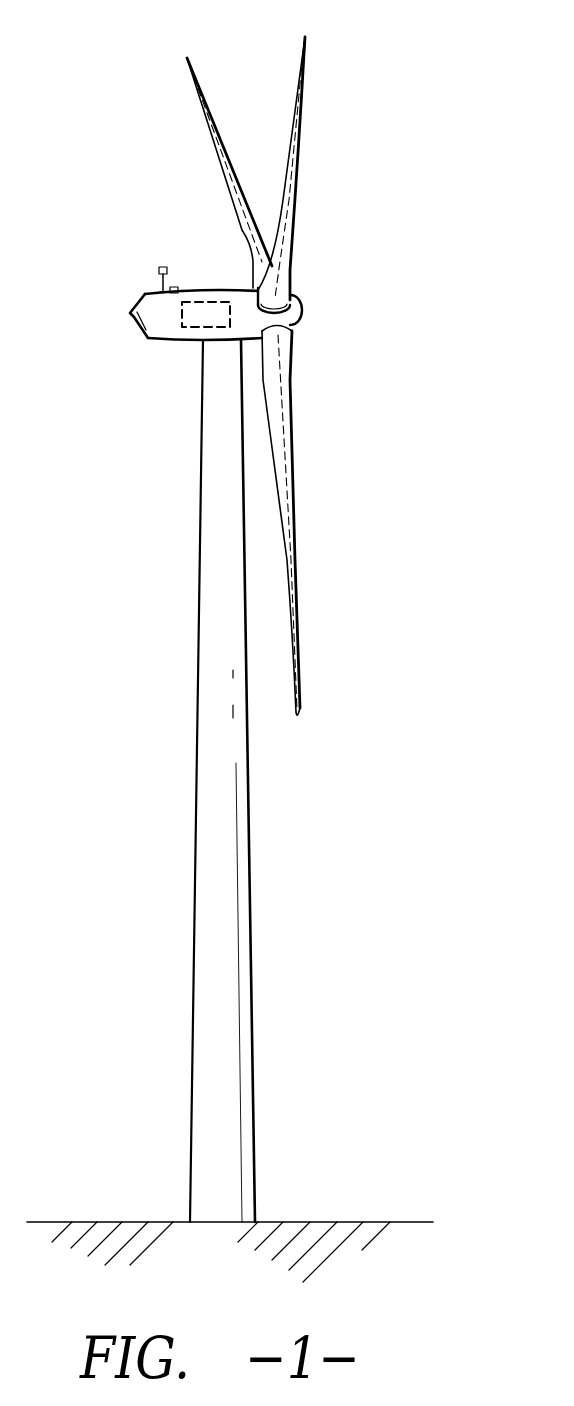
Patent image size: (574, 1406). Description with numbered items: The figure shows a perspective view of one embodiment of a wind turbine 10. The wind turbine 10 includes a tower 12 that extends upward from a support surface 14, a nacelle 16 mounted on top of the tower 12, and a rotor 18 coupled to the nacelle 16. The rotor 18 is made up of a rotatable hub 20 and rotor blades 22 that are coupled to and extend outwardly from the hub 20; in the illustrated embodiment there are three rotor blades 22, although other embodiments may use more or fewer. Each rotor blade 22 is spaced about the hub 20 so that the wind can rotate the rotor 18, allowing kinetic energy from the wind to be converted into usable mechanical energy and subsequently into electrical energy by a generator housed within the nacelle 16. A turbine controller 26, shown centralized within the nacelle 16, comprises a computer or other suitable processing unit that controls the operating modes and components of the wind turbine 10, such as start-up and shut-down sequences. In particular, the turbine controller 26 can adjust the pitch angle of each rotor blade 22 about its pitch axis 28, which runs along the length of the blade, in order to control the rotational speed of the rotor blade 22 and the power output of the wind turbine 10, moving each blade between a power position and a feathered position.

The wind turbine 10 is at (408, 120).
The tower 12 is at (208, 902).
The support surface 14 is at (115, 1222).
The nacelle 16 is at (177, 343).
The rotor 18 is at (307, 291).
The rotatable hub 20 is at (293, 320).
The rotor blade 22 is at (297, 78).
The turbine controller 26 is at (210, 302).
The pitch axis 28 is at (228, 192).